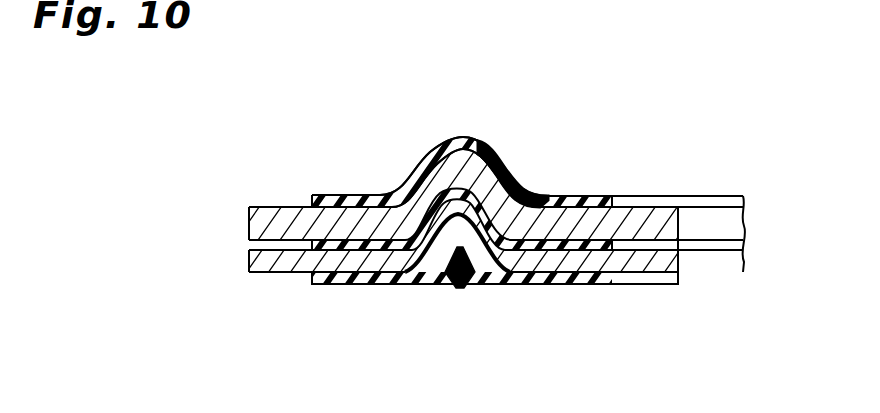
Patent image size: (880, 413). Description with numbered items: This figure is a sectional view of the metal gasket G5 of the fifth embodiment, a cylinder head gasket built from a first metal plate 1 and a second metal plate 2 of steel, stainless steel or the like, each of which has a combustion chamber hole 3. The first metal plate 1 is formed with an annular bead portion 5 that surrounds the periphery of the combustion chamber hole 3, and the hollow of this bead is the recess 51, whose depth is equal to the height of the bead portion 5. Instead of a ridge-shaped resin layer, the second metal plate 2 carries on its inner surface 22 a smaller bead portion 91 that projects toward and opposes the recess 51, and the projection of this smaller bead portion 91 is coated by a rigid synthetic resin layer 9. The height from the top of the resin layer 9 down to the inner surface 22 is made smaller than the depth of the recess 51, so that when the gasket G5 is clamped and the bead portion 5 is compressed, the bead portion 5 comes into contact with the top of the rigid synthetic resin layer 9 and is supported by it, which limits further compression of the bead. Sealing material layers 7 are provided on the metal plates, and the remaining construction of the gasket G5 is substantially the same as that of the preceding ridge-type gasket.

The first metal plate 1 is at (276, 213).
The second metal plate 2 is at (282, 262).
The combustion chamber hole 3 is at (720, 262).
The bead portion 5 is at (465, 146).
The recess 51 is at (437, 152).
The sealing material layers 7 is at (372, 278).
The rigid synthetic resin layer 9 is at (504, 160).
The smaller bead portion 91 is at (459, 265).
The inner surface 22 is at (258, 238).
The gasket G5 is at (600, 190).